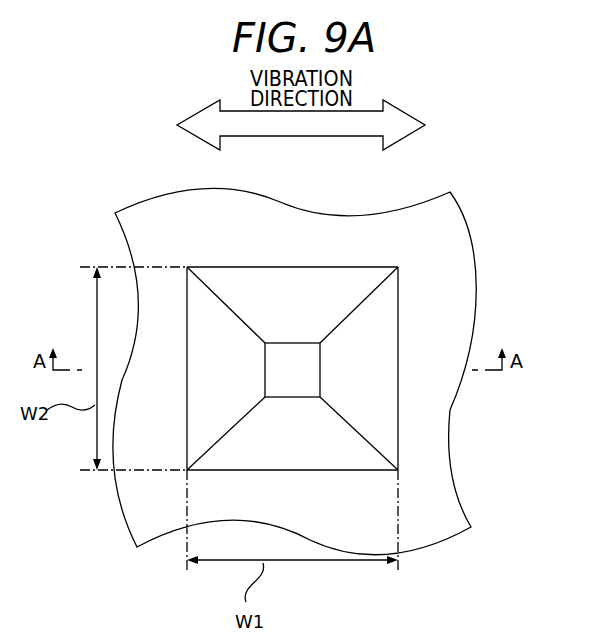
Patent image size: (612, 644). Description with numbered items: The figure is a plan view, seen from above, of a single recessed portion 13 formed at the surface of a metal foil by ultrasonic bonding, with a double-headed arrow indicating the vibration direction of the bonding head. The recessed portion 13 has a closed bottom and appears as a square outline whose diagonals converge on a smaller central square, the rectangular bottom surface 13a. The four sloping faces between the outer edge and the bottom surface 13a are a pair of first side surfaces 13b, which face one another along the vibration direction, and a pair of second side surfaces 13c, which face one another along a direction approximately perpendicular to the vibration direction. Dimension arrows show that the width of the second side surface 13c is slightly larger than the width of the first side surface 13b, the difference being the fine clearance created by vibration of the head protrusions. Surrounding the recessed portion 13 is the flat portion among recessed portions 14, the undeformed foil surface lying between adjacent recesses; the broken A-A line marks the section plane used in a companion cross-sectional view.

The recessed portion 13 is at (407, 448).
The rectangular bottom surface 13a is at (293, 385).
The first side surface 13b is at (387, 312).
The second side surface 13c is at (245, 288).
The flat portion among recessed portions 14 is at (138, 232).